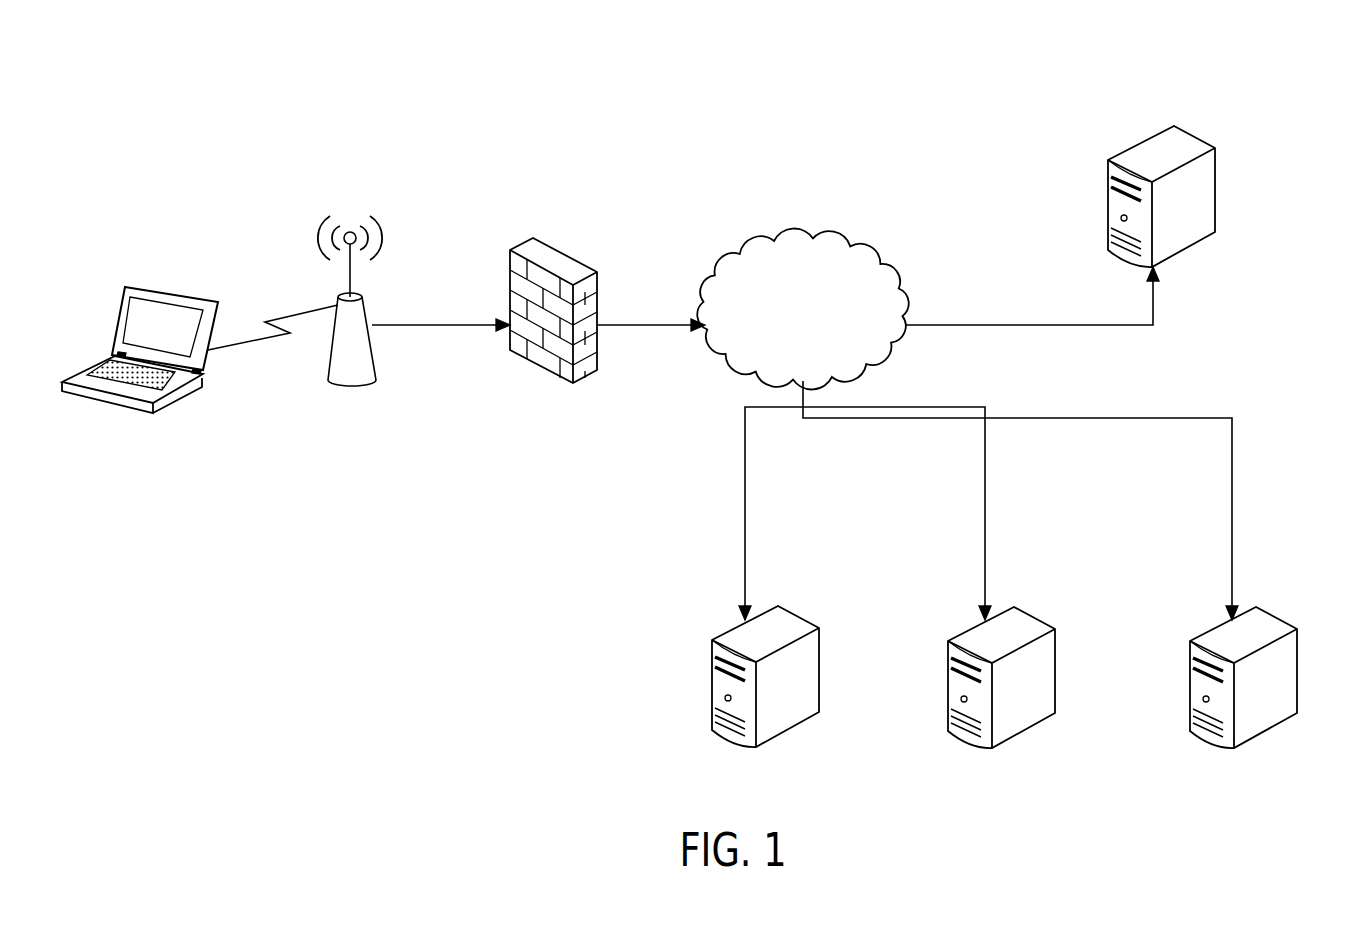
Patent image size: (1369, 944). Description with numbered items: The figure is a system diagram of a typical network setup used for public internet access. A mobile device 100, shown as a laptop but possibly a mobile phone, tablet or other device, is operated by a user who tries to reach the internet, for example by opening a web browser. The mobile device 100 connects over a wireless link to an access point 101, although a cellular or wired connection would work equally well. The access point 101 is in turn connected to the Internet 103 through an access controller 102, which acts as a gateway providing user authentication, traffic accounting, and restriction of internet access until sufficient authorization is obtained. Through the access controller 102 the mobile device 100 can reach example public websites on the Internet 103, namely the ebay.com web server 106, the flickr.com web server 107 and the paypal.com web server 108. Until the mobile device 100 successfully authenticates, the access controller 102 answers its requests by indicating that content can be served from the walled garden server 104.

The mobile device 100 is at (172, 289).
The access point 101 is at (351, 231).
The access controller 102 is at (570, 258).
The Internet 103 is at (863, 250).
The walled garden server 104 is at (1188, 128).
The ebay.com web server 106 is at (815, 627).
The flickr.com web server 107 is at (1051, 627).
The paypal.com web server 108 is at (1293, 627).